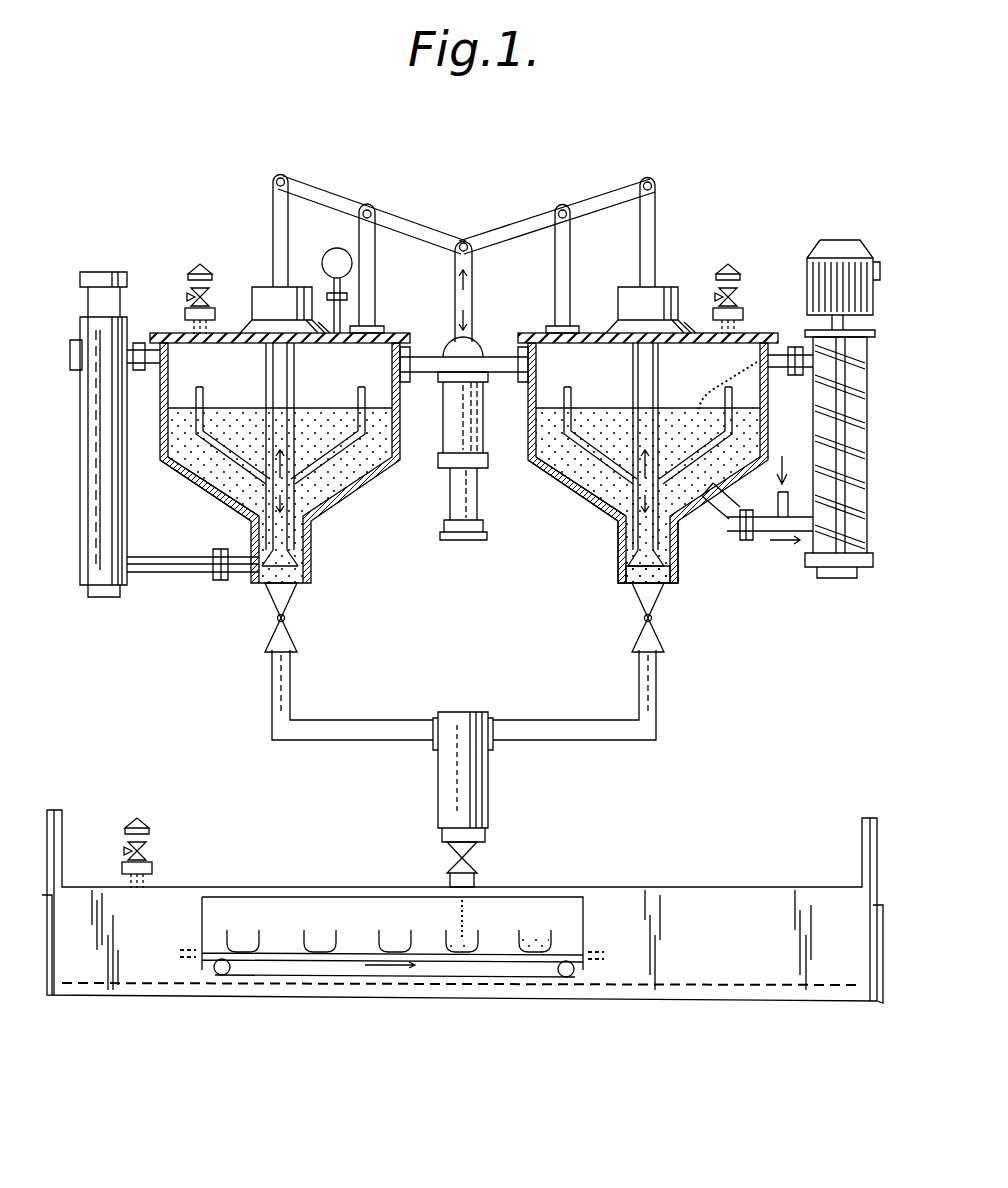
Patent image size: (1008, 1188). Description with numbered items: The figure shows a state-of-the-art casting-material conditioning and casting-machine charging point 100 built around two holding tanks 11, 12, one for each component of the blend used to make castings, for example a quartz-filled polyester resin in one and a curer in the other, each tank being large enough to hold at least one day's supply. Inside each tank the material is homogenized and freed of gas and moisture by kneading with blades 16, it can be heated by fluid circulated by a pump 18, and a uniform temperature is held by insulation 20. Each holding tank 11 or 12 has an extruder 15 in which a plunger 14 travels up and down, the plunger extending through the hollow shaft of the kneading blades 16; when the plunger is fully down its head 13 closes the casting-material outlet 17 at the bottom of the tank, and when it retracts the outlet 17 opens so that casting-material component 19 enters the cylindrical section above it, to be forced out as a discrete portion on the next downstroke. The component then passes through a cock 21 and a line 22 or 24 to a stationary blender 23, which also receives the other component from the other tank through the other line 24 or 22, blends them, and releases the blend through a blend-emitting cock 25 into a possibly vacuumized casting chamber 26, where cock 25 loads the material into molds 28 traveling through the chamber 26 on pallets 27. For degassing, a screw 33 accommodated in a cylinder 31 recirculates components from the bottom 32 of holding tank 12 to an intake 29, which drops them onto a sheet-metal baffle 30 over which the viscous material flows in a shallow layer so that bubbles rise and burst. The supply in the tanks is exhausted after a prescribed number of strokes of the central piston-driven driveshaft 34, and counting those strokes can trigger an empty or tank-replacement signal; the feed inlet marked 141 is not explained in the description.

The casting-material conditioning and casting-machine charging point 100 is at (474, 150).
The holding tank 11 is at (376, 478).
The holding tank 12 is at (572, 495).
The head 13 is at (278, 525).
The plunger 14 is at (643, 533).
The extruder 15 is at (617, 571).
The kneading blades 16 is at (205, 392).
The casting-material outlet 17 is at (655, 585).
The pump 18 is at (80, 481).
The casting-material component 19 is at (562, 484).
The insulation 20 is at (202, 494).
The cock 21 is at (642, 637).
The line 22 is at (598, 738).
The stationary blender 23 is at (473, 786).
The line 24 is at (360, 743).
The blend-emitting cock 25 is at (452, 845).
The casting chamber 26 is at (693, 905).
The pallets 27 is at (528, 966).
The molds 28 is at (317, 943).
The intake 29 is at (776, 356).
The sheet-metal baffle 30 is at (737, 372).
The cylinder 31 is at (868, 392).
The bottom 32 is at (722, 518).
The screw 33 is at (858, 487).
The central piston-driven driveshaft 34 is at (472, 312).
The feed inlet 141 is at (798, 440).